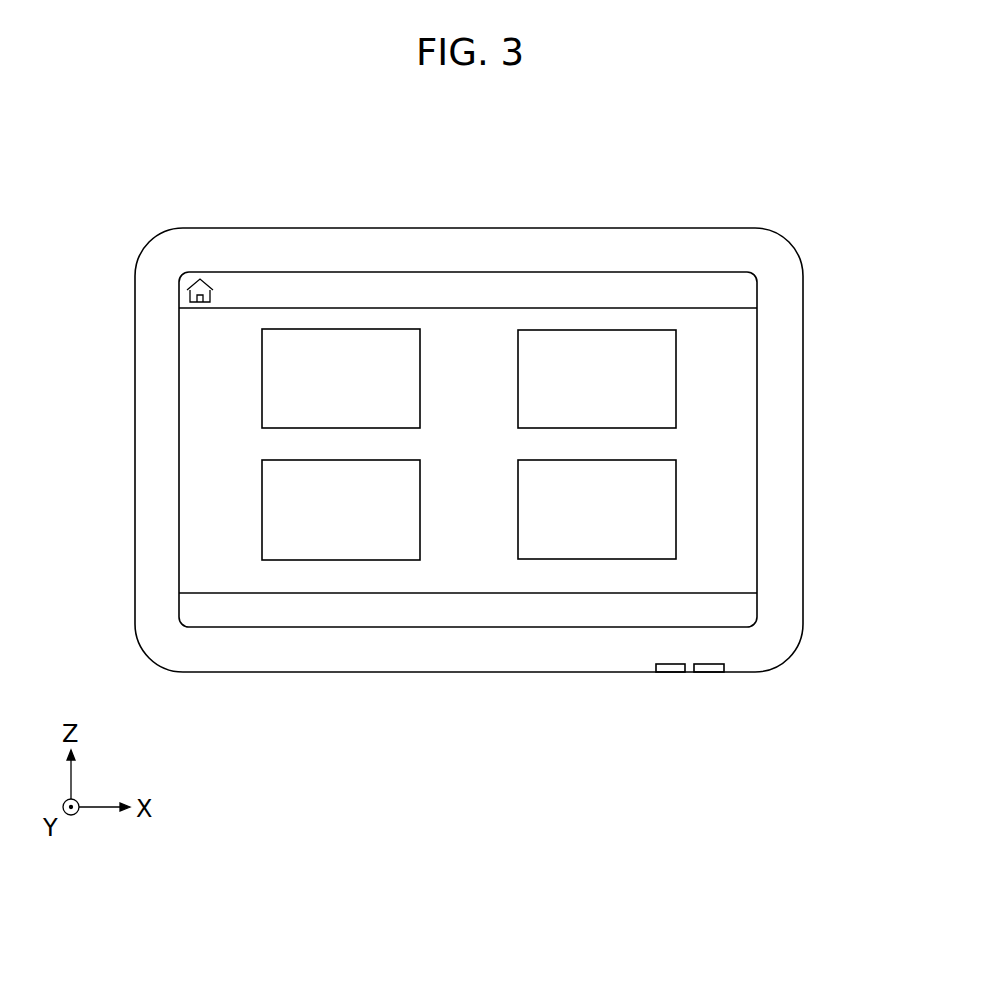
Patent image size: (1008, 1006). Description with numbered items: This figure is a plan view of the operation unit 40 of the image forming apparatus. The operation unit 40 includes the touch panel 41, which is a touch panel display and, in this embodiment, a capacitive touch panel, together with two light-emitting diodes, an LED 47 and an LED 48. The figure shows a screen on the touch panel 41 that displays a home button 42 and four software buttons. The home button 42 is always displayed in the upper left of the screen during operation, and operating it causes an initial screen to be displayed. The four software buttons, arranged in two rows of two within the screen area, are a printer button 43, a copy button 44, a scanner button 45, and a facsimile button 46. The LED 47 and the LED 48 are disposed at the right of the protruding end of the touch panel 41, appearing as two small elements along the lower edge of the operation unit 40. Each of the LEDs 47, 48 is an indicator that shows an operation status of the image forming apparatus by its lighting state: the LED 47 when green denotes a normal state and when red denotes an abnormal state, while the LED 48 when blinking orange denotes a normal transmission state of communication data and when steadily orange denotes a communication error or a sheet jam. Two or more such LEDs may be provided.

The operation unit 40 is at (818, 182).
The touch panel 41 is at (745, 328).
The home button 42 is at (192, 280).
The printer button 43 is at (275, 381).
The copy button 44 is at (278, 512).
The scanner button 45 is at (662, 380).
The facsimile button 46 is at (662, 509).
The LED 47 is at (669, 671).
The LED 48 is at (710, 671).